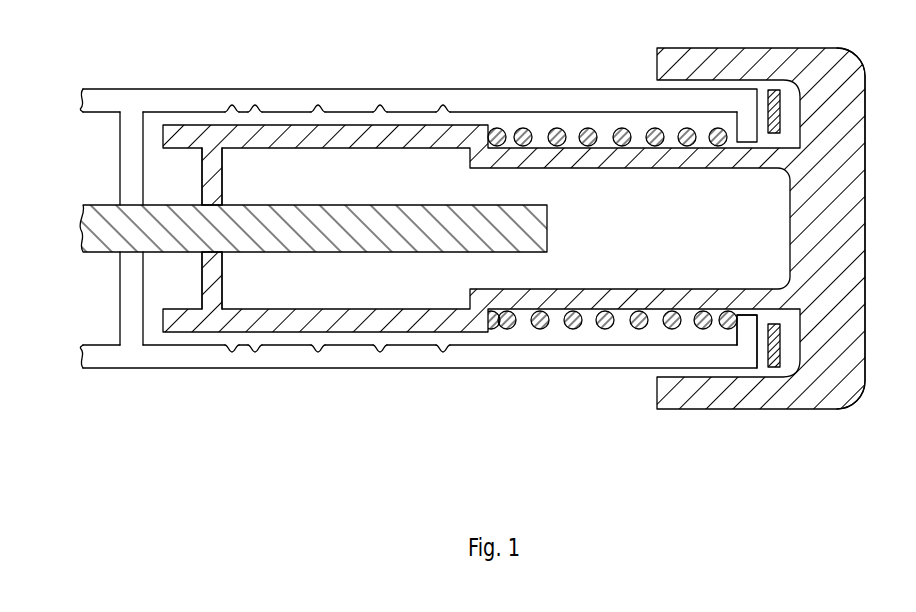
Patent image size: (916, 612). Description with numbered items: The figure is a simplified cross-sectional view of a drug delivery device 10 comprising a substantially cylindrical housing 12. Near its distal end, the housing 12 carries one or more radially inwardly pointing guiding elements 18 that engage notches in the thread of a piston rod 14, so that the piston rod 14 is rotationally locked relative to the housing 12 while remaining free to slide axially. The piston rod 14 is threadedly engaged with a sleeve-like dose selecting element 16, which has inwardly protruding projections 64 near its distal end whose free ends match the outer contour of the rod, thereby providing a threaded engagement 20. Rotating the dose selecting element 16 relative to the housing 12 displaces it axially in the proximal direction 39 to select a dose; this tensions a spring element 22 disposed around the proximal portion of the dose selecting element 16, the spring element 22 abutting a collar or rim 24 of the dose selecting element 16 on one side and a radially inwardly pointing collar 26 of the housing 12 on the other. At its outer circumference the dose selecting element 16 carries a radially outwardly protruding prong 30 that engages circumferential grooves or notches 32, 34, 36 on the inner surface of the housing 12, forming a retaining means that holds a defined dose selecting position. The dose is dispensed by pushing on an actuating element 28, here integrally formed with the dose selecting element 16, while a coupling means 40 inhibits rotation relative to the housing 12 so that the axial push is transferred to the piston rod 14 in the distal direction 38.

The drug delivery device 10 is at (276, 448).
The housing 12 is at (573, 100).
The piston rod 14 is at (103, 240).
The dose selecting element 16 is at (413, 135).
The guiding elements 18 is at (130, 157).
The threaded engagement 20 is at (231, 198).
The spring element 22 is at (523, 128).
The collar or rim 24 is at (498, 315).
The collar 26 is at (747, 325).
The actuating element 28 is at (855, 103).
The prong 30 is at (232, 106).
The groove or notch 32 is at (255, 106).
The groove or notch 34 is at (318, 106).
The groove or notch 36 is at (380, 106).
The distal direction 38 is at (20, 230).
The proximal direction 39 is at (660, 477).
The coupling means 40 is at (775, 92).
The projections 64 is at (202, 179).